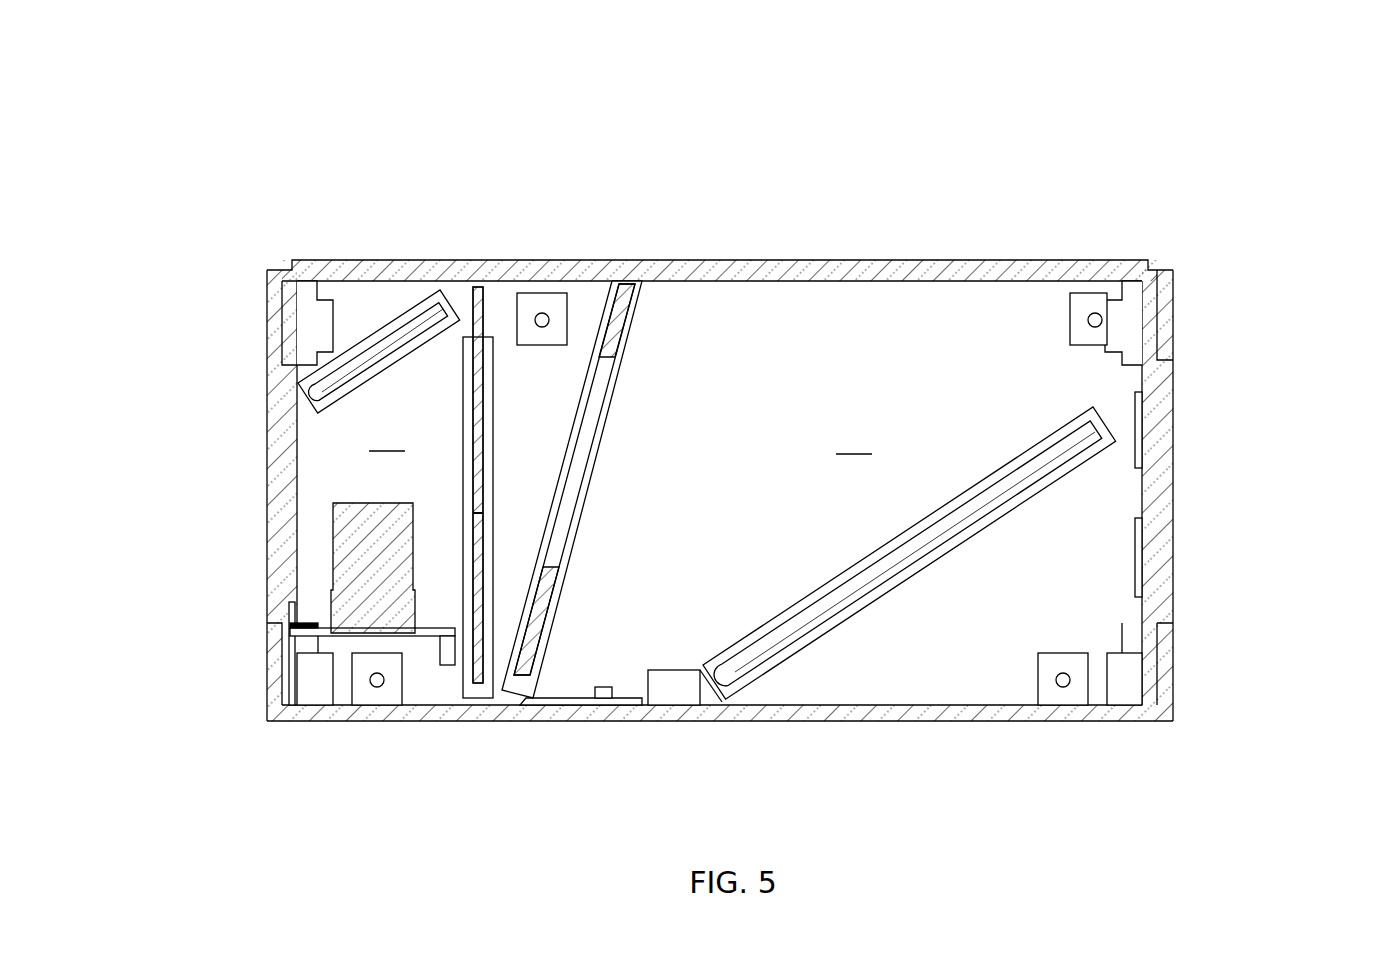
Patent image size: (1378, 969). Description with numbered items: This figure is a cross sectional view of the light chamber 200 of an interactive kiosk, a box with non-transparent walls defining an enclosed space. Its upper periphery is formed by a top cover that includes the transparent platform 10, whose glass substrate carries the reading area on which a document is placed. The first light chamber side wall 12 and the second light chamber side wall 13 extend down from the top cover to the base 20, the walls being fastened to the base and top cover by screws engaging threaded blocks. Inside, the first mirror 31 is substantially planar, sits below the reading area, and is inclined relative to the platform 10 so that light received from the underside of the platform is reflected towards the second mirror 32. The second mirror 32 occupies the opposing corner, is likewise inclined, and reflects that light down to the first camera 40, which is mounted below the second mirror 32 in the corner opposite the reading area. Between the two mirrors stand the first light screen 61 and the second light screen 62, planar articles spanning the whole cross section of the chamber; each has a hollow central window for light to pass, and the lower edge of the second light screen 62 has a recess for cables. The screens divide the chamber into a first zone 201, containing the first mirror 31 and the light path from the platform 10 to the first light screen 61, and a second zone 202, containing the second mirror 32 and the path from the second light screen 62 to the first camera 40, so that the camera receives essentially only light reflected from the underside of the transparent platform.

The light chamber 200 is at (190, 185).
The platform 10 is at (765, 260).
The first light chamber side wall 12 is at (1177, 546).
The second light chamber side wall 13 is at (267, 390).
The base 20 is at (948, 722).
The first mirror 31 is at (1103, 421).
The second mirror 32 is at (410, 322).
The first camera 40 is at (353, 570).
The first light screen 61 is at (614, 281).
The second light screen 62 is at (477, 281).
The first zone 201 is at (854, 443).
The second zone 202 is at (387, 440).